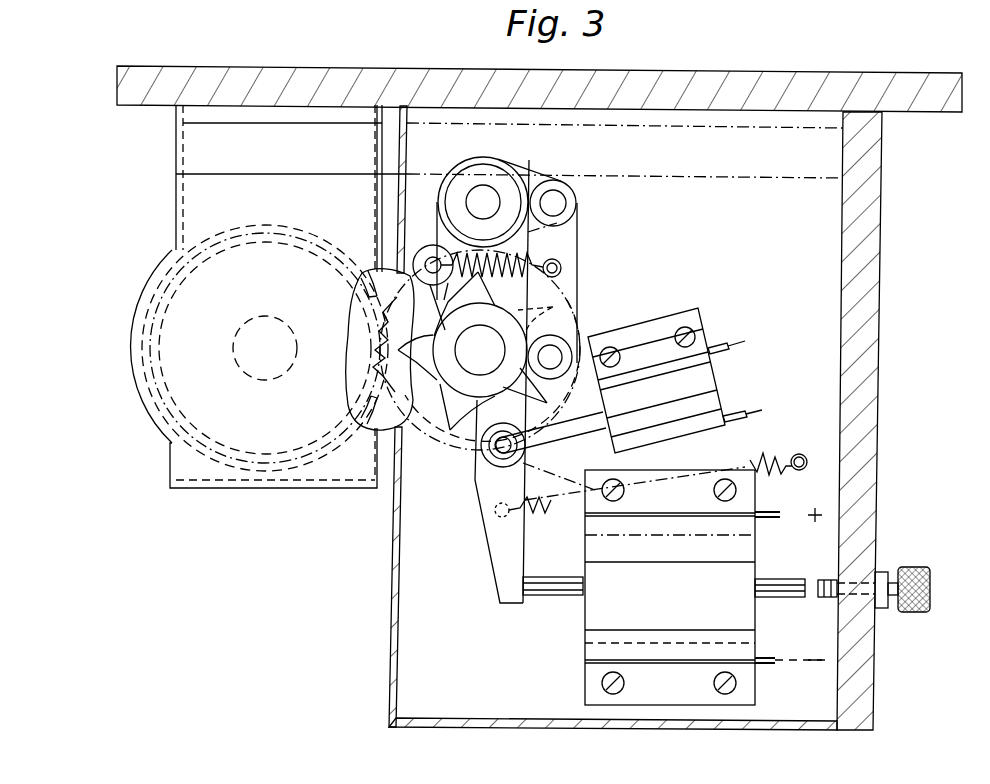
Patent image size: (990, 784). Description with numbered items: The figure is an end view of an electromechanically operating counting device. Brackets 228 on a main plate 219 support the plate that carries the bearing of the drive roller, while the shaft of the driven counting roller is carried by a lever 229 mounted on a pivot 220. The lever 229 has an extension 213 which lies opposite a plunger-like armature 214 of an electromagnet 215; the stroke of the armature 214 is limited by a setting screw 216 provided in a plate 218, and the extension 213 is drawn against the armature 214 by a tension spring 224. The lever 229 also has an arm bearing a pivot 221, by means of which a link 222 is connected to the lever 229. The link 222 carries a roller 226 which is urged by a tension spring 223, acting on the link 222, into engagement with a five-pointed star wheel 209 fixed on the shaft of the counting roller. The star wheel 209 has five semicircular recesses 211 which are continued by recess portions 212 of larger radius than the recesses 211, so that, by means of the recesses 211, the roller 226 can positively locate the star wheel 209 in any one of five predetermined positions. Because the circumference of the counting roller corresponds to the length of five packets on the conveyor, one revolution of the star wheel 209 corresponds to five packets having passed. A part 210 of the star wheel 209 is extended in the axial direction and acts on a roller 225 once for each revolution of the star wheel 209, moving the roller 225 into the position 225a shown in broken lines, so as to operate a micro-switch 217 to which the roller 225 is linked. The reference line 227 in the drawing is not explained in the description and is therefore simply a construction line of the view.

The five-pointed star wheel 209 is at (460, 432).
The part of the star wheel 210 is at (530, 396).
The semicircular recesses 211 is at (430, 370).
The recess portions 212 is at (386, 333).
The extension of the lever 213 is at (505, 585).
The plunger-like armature 214 is at (550, 596).
The electromagnet 215 is at (663, 618).
The setting screw 216 is at (893, 600).
The micro-switch 217 is at (705, 387).
The plate 218 is at (862, 422).
The main plate 219 is at (902, 112).
The pivot 220 is at (490, 204).
The pivot 221 is at (560, 204).
The link 222 is at (575, 276).
The tension spring 223 is at (572, 253).
The tension spring 224 is at (778, 470).
The roller 225 is at (492, 458).
The position of the roller 225a is at (500, 494).
The roller 226 is at (562, 350).
The axis line 227 is at (720, 160).
The brackets 228 is at (205, 151).
The lever 229 is at (447, 238).